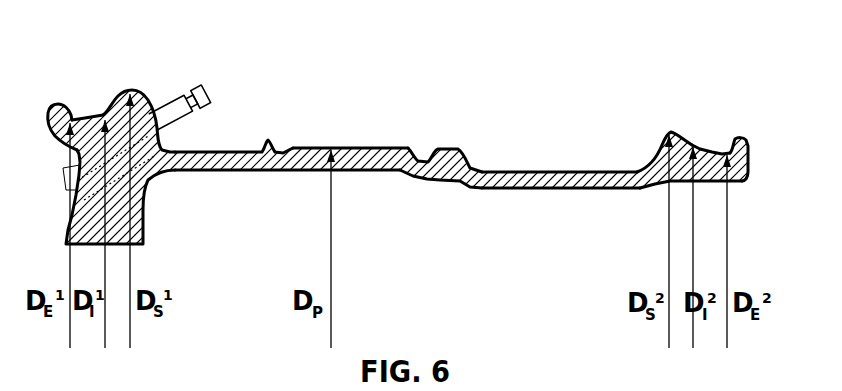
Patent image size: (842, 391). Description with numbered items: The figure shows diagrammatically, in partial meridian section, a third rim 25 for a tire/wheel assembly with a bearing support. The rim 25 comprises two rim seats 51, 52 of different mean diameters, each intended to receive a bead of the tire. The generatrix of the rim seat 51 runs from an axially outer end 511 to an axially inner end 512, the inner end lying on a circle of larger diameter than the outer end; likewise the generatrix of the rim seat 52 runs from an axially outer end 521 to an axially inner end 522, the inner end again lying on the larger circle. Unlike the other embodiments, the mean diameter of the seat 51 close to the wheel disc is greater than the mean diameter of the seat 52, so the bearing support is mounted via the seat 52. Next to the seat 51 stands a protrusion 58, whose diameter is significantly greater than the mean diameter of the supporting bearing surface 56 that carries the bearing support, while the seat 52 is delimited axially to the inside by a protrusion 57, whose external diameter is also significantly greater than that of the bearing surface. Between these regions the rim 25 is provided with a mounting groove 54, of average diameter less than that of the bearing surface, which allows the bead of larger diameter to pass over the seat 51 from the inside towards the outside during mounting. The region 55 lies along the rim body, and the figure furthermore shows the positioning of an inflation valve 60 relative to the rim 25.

The rim 25 is at (416, 180).
The rim seat 51 is at (87, 104).
The axially outer end 511 is at (72, 118).
The axially inner end 512 is at (105, 117).
The protrusion 58 is at (147, 93).
The inflation valve 60 is at (214, 103).
The mounting groove 54 is at (218, 147).
The supporting bearing surface 56 is at (357, 147).
The plate portion 55 is at (577, 157).
The protrusion 57 is at (667, 130).
The rim seat 52 is at (719, 142).
The axially inner end 522 is at (697, 143).
The axially outer end 521 is at (732, 144).